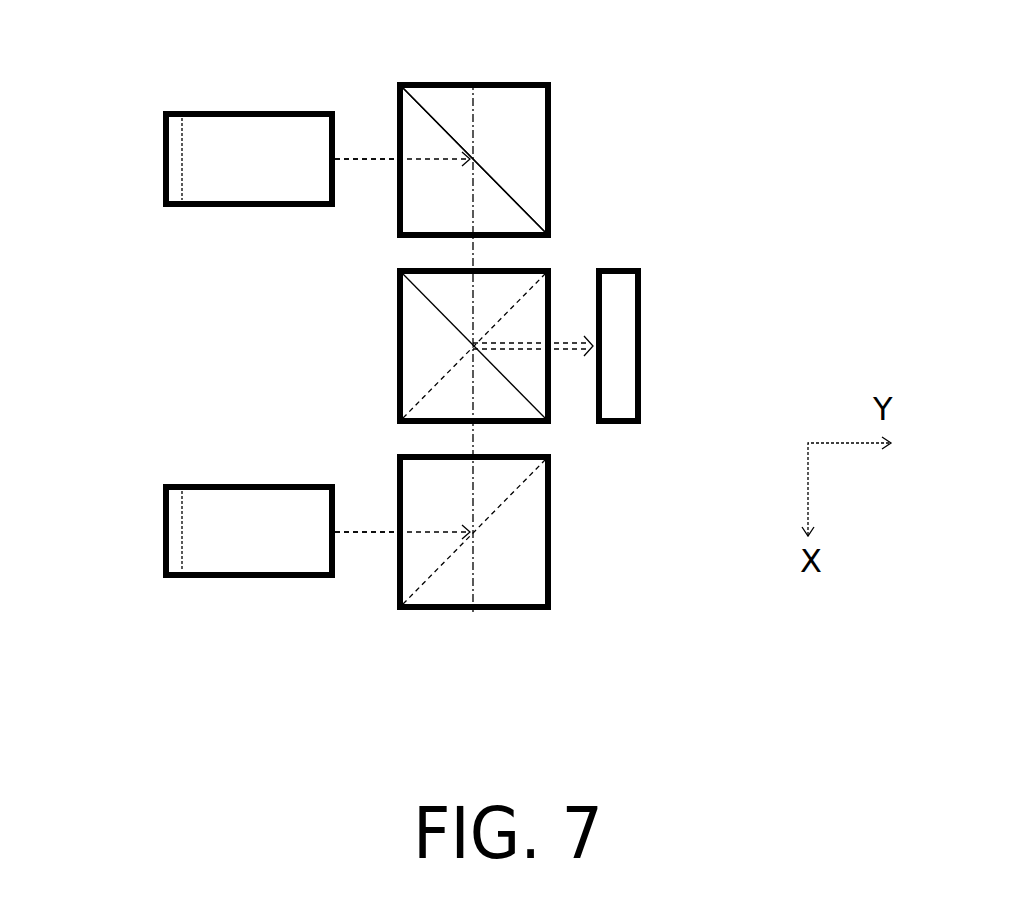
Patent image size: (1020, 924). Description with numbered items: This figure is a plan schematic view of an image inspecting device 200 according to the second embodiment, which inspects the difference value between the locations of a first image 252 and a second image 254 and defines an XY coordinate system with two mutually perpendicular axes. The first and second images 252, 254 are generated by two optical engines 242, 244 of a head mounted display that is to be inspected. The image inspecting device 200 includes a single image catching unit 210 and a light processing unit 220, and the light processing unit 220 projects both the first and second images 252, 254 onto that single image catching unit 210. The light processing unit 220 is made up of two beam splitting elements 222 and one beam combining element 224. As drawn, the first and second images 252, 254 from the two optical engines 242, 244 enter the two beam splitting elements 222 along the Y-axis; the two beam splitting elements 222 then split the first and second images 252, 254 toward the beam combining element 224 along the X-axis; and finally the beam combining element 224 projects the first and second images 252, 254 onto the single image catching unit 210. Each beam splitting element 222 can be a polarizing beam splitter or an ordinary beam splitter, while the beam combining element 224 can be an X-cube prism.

The image inspecting device 200 is at (640, 630).
The image catching unit 210 is at (641, 346).
The light processing unit 220 is at (551, 72).
The beam splitting element 222 is at (500, 185).
The beam combining element 224 is at (551, 385).
The optical engine 242 is at (160, 158).
The optical engine 244 is at (160, 530).
The first image 252 is at (390, 158).
The second image 254 is at (360, 533).